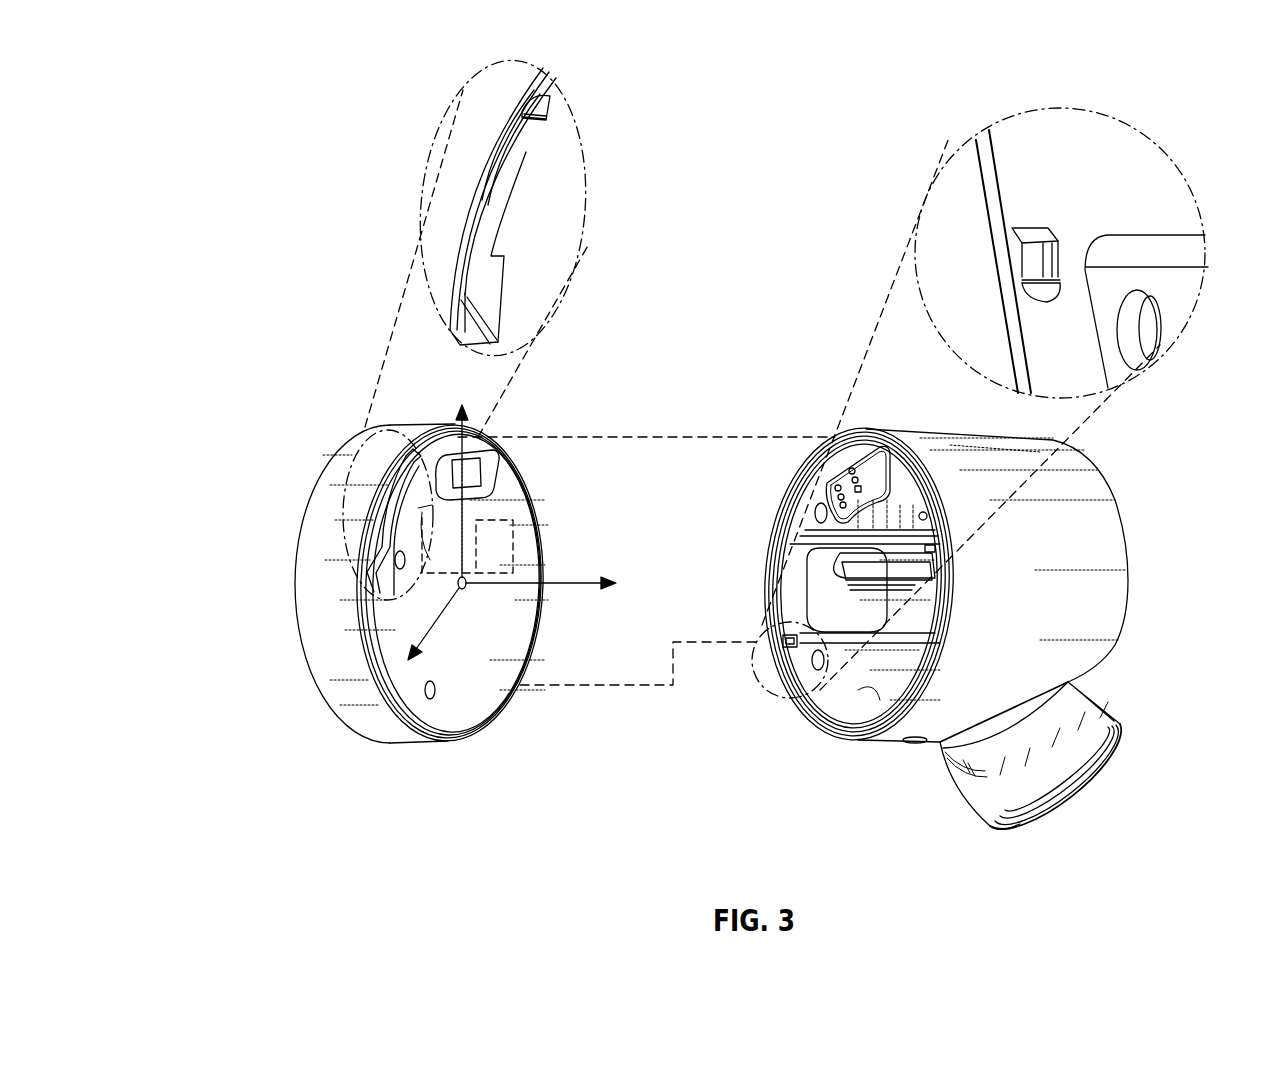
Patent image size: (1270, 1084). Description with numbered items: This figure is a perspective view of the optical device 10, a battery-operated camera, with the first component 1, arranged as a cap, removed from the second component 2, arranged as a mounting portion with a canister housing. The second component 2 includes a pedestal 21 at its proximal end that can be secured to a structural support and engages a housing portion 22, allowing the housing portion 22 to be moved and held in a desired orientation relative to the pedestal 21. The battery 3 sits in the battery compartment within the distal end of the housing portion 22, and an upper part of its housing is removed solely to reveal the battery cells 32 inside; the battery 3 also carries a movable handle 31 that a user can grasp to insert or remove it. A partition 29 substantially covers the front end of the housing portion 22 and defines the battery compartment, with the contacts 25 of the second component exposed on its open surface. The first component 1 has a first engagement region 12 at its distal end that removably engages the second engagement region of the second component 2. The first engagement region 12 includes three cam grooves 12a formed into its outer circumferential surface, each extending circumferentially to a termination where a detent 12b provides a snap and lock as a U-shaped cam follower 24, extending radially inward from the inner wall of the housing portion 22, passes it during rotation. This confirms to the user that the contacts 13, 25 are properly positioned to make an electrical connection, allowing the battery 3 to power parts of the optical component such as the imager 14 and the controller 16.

The first component 1 is at (243, 622).
The second component 2 is at (1162, 562).
The battery 3 is at (845, 615).
The optical device 10 is at (288, 138).
The first engagement region 12 is at (532, 212).
The cam groove 12a is at (525, 152).
The detent 12b is at (533, 112).
The contact 13 is at (490, 475).
The imager 14 is at (505, 567).
The controller 16 is at (447, 560).
The pedestal 21 is at (1088, 745).
The housing portion 22 is at (1100, 497).
The cam follower 24 is at (785, 645).
The contact 25 is at (860, 468).
The partition 29 is at (868, 702).
The handle 31 is at (897, 612).
The battery cell 32 is at (835, 580).